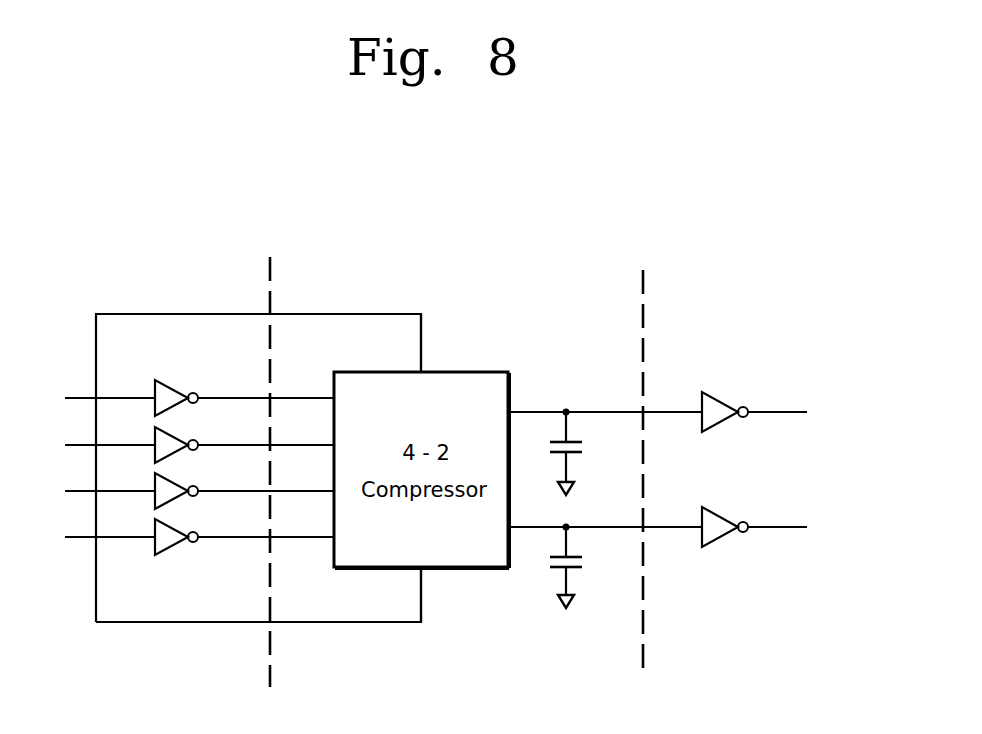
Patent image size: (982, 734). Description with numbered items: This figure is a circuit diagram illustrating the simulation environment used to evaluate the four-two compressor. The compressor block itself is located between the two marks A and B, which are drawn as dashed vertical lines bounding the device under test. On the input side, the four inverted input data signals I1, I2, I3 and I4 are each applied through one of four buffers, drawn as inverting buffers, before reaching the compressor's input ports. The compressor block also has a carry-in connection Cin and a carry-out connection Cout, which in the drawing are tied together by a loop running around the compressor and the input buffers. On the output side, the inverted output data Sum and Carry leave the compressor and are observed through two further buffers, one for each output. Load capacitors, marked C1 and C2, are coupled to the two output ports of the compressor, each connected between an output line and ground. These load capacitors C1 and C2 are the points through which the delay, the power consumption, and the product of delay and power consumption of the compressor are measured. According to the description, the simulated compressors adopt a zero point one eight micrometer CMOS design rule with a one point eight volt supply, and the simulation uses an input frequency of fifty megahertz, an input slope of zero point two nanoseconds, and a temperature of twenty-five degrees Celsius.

The input data I1 is at (62, 524).
The input data I2 is at (62, 478).
The input data I3 is at (62, 432).
The input data I4 is at (62, 386).
The carry input of 4-2 compressor Cin is at (439, 343).
The carry output of 4-2 compressor Cout is at (445, 594).
The mark A is at (269, 458).
The mark B is at (642, 460).
The load capacitor C1 is at (582, 452).
The load capacitor C2 is at (582, 566).
The output data Sum is at (857, 400).
The output data Carry is at (882, 516).